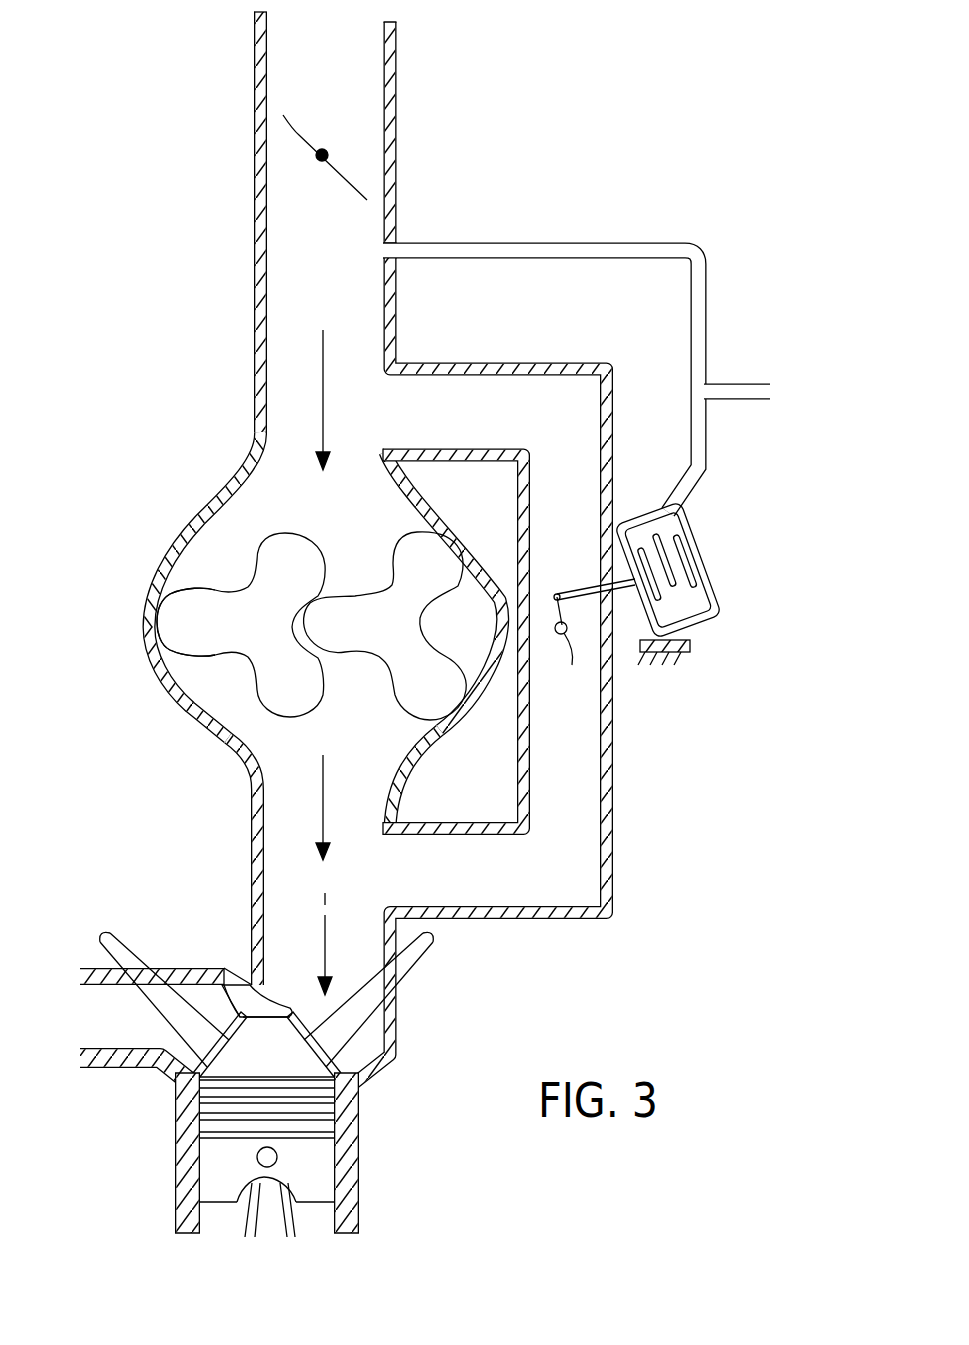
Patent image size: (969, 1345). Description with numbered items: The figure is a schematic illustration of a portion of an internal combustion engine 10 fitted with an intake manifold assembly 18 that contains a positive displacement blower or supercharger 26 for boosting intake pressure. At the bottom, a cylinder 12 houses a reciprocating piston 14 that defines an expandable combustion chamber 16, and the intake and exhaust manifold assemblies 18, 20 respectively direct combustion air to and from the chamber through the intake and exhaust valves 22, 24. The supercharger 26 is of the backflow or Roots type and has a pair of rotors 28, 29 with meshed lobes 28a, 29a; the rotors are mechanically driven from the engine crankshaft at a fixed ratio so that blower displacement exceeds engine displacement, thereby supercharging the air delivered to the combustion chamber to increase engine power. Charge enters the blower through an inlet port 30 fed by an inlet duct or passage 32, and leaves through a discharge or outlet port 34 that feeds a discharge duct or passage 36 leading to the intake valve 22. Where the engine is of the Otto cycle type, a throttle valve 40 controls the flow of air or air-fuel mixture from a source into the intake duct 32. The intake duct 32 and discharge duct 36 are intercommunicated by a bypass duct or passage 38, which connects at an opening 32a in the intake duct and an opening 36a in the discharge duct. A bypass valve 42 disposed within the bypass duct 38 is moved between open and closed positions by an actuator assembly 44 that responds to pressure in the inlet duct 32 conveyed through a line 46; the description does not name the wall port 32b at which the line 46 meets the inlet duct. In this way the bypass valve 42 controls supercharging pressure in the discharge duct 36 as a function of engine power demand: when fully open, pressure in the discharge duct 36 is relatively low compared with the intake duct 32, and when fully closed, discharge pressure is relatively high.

The internal combustion engine 10 is at (133, 1111).
The cylinder 12 is at (352, 1141).
The reciprocating piston 14 is at (318, 1186).
The expandable combustion chamber 16 is at (284, 1066).
The intake manifold assembly 18 is at (152, 763).
The exhaust manifold assembly 20 is at (122, 1016).
The intake valve 22 is at (420, 958).
The exhaust valve 24 is at (108, 936).
The positive displacement blower or supercharger 26 is at (138, 562).
The rotor 28 is at (212, 694).
The lobe 28a is at (172, 628).
The rotor 29 is at (372, 685).
The lobe 29a is at (432, 553).
The inlet port 30 is at (287, 503).
The inlet duct or passage 32 is at (292, 210).
The opening 32a is at (385, 410).
The control port 32b is at (385, 244).
The discharge or outlet port 34 is at (318, 746).
The discharge duct or passage 36 is at (320, 880).
The opening 36a is at (392, 876).
The bypass duct or passage 38 is at (583, 838).
The throttle valve 40 is at (299, 135).
The bypass valve 42 is at (585, 632).
The actuator assembly 44 is at (748, 549).
The line 46 is at (578, 243).